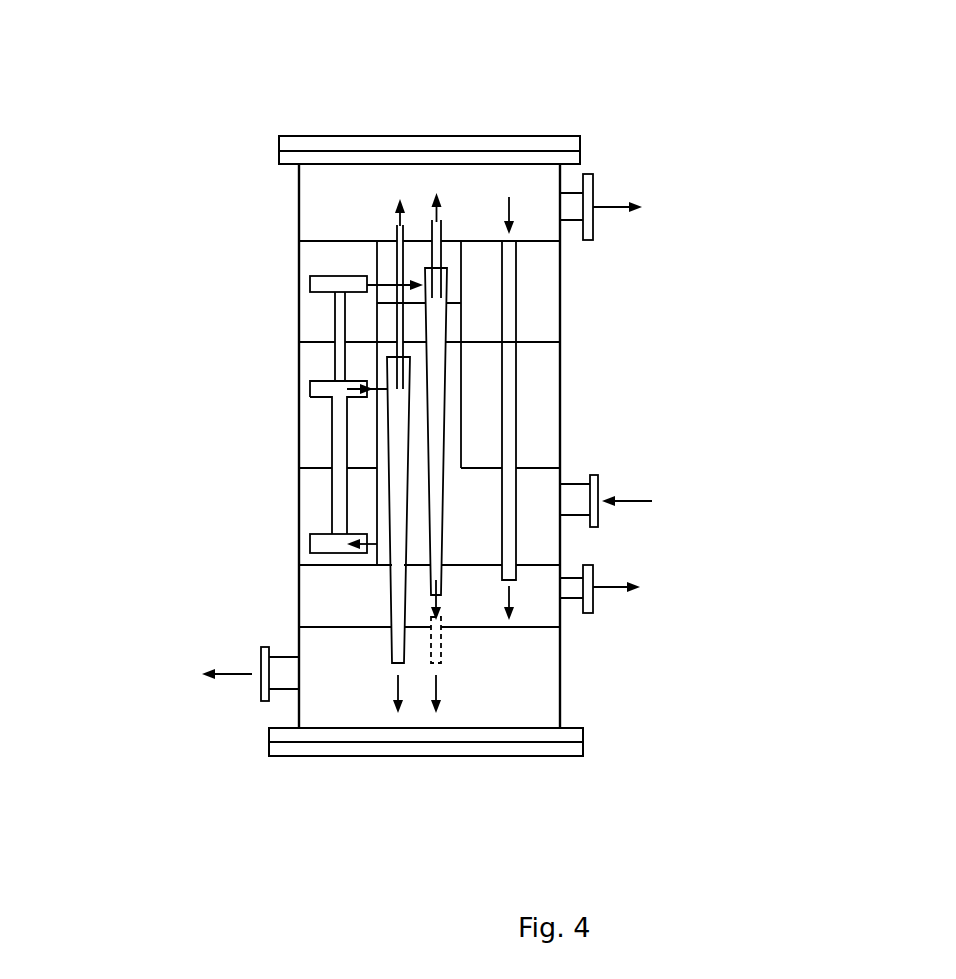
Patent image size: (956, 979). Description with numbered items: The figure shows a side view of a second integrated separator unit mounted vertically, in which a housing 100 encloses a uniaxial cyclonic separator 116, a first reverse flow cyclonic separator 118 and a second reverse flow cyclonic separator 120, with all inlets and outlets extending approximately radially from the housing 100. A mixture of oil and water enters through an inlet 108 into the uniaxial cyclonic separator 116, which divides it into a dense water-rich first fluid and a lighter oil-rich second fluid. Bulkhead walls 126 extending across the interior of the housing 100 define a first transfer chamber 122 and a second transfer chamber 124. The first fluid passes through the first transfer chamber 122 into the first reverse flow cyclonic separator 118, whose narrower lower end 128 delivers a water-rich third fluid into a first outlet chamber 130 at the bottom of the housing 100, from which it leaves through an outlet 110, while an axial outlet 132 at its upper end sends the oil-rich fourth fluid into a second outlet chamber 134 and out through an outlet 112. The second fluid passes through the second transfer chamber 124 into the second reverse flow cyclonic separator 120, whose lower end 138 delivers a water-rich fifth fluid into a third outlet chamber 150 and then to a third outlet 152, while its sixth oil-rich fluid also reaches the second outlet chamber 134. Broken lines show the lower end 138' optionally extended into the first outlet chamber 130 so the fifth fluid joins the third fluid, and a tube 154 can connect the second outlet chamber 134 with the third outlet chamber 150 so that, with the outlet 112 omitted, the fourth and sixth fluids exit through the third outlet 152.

The housing 100 is at (292, 224).
The inlet 108 is at (598, 520).
The outlet 110 is at (282, 677).
The outlet 112 is at (588, 172).
The uniaxial cyclonic separator 116 is at (324, 355).
The first reverse flow cyclonic separator 118 is at (380, 594).
The second reverse flow cyclonic separator 120 is at (459, 449).
The first transfer chamber 122 is at (540, 392).
The second transfer chamber 124 is at (552, 287).
The bulkhead walls 126 is at (540, 241).
The lower end 128 is at (392, 650).
The first outlet chamber 130 is at (365, 717).
The axial outlet 132 is at (397, 255).
The second outlet chamber 134 is at (470, 178).
The lower end 138 is at (325, 459).
The extended lower end 138' is at (567, 665).
The third outlet chamber 150 is at (540, 614).
The third outlet 152 is at (593, 604).
The tube 154 is at (540, 545).